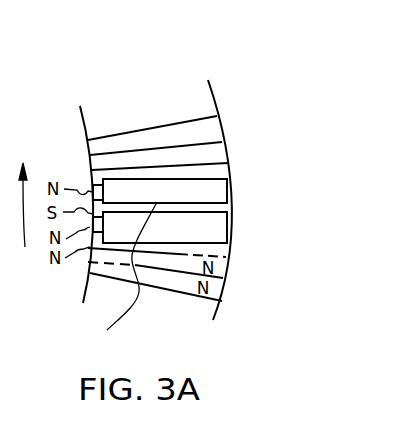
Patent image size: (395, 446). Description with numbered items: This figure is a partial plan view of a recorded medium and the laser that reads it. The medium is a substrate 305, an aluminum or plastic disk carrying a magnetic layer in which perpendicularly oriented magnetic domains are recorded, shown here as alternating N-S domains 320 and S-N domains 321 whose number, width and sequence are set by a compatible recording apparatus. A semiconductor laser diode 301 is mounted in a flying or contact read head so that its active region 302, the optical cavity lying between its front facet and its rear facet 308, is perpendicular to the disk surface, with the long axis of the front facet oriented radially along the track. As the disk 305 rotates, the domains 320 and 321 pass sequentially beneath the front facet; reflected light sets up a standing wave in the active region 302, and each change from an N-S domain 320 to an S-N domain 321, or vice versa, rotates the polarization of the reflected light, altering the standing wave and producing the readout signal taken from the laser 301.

The substrate 305 is at (178, 75).
The S-N domain 321 is at (220, 130).
The N-S domain 320 is at (226, 150).
The active region 302 is at (228, 205).
The semiconductor laser diode 301 is at (217, 230).
The rear facet 308 is at (109, 274).